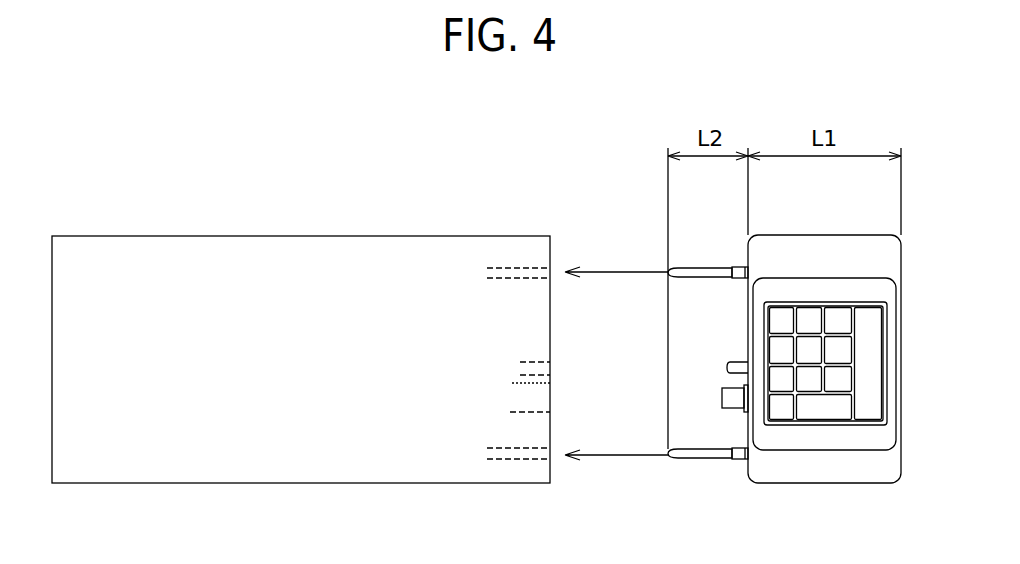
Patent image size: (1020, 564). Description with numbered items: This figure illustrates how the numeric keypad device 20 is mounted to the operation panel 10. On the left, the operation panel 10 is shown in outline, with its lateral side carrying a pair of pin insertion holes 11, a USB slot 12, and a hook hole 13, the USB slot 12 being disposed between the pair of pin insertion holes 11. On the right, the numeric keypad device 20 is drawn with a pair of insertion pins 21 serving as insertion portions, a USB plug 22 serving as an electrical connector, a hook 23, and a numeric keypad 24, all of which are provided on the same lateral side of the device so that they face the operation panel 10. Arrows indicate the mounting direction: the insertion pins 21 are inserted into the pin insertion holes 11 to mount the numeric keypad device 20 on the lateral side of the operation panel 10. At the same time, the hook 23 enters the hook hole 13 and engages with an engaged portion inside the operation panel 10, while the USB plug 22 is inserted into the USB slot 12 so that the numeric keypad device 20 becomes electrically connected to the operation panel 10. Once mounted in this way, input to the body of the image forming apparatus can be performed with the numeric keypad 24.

The operation panel 10 is at (121, 217).
The pin insertion holes 11 is at (503, 268).
The USB slot 12 is at (540, 412).
The hook hole 13 is at (533, 360).
The numeric keypad device 20 is at (917, 245).
The insertion pins 21 is at (702, 268).
The USB plug 22 is at (733, 403).
The hook 23 is at (738, 362).
The numeric keypad 24 is at (823, 425).